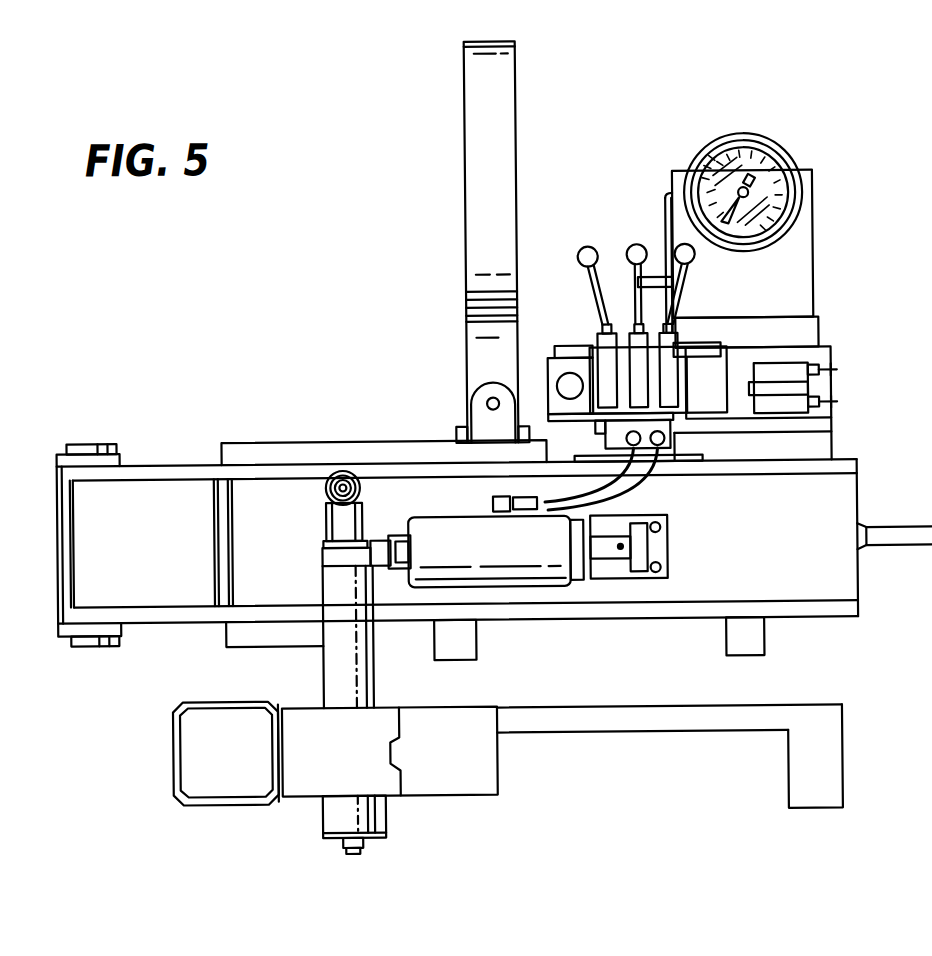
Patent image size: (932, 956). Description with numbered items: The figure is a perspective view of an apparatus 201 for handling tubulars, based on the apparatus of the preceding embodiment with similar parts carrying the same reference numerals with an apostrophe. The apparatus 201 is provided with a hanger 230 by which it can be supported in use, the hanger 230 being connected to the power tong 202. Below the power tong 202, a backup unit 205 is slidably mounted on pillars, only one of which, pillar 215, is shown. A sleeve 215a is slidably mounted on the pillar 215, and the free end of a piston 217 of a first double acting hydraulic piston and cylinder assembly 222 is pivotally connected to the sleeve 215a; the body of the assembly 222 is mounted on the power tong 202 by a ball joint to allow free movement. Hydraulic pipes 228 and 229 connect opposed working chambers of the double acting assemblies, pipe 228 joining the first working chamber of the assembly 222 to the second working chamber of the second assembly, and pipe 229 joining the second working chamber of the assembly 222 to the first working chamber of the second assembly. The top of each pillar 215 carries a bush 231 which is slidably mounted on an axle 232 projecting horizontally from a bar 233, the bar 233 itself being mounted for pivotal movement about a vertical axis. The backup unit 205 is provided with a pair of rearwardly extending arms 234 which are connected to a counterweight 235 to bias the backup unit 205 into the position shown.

The apparatus 201 is at (332, 311).
The power tong 202 is at (258, 430).
The backup unit 205 is at (192, 756).
The pillar 215 is at (340, 673).
The sleeve 215a is at (322, 557).
The piston 217 is at (396, 568).
The first double acting hydraulic piston and cylinder assembly 222 is at (540, 563).
The hydraulic pipe 228 is at (628, 447).
The hydraulic pipe 229 is at (626, 480).
The hanger 230 is at (482, 107).
The bush 231 is at (331, 496).
The axle 232 is at (338, 467).
The bar 233 is at (362, 516).
The rearwardly extending arms 234 is at (654, 722).
The counterweight 235 is at (820, 779).